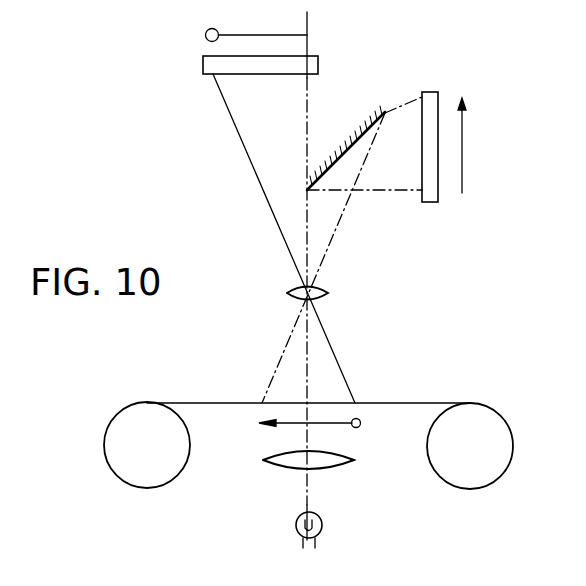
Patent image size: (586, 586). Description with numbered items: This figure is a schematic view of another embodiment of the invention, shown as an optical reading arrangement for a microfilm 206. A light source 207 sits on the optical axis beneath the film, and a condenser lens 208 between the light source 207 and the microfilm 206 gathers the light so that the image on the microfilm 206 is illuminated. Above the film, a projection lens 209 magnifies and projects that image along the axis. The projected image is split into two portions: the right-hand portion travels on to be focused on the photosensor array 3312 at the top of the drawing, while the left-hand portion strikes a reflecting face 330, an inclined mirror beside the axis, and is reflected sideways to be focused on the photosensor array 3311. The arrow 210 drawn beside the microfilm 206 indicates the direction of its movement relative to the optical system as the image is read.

The photosensor array 3312 is at (203, 70).
The reflecting face 330 is at (348, 142).
The photosensor array 3311 is at (428, 202).
The projection lens 209 is at (328, 293).
The microfilm 206 is at (225, 403).
The scanning direction arrow 210 is at (359, 427).
The condenser lens 208 is at (337, 472).
The light source 207 is at (322, 519).